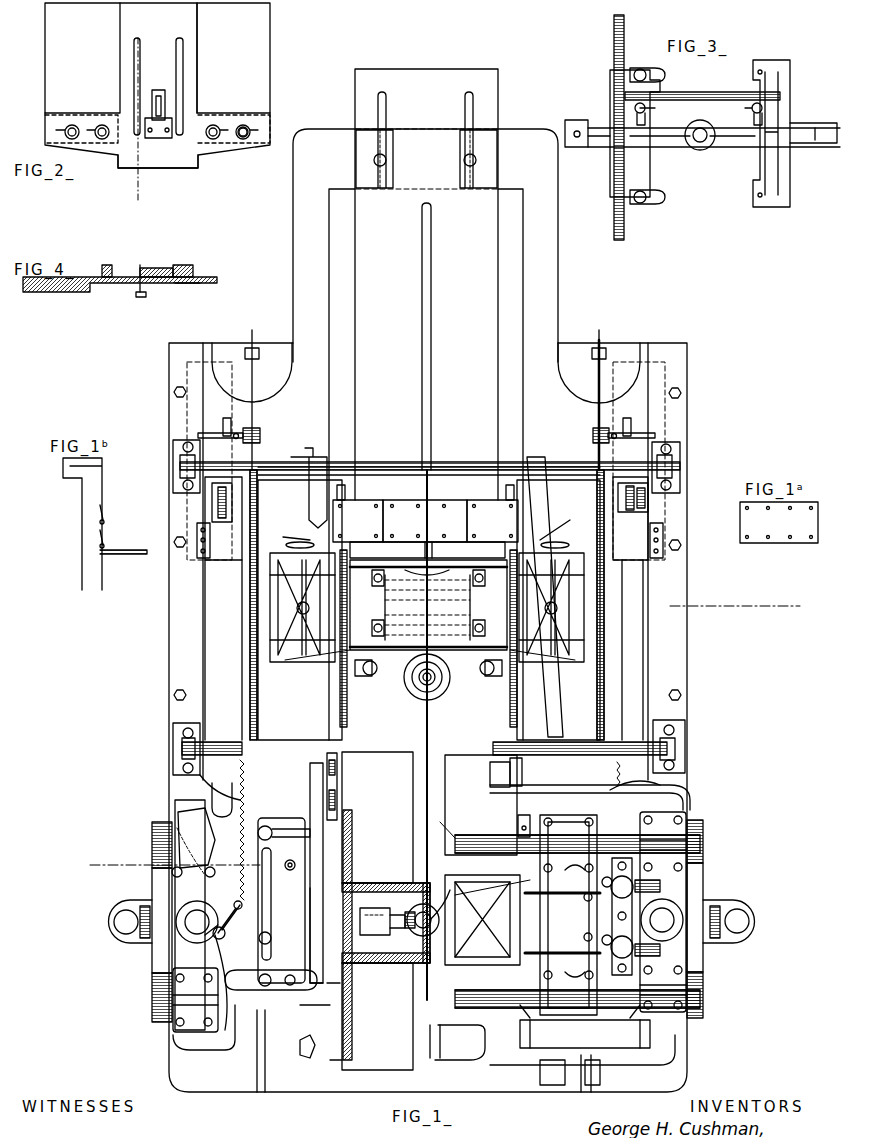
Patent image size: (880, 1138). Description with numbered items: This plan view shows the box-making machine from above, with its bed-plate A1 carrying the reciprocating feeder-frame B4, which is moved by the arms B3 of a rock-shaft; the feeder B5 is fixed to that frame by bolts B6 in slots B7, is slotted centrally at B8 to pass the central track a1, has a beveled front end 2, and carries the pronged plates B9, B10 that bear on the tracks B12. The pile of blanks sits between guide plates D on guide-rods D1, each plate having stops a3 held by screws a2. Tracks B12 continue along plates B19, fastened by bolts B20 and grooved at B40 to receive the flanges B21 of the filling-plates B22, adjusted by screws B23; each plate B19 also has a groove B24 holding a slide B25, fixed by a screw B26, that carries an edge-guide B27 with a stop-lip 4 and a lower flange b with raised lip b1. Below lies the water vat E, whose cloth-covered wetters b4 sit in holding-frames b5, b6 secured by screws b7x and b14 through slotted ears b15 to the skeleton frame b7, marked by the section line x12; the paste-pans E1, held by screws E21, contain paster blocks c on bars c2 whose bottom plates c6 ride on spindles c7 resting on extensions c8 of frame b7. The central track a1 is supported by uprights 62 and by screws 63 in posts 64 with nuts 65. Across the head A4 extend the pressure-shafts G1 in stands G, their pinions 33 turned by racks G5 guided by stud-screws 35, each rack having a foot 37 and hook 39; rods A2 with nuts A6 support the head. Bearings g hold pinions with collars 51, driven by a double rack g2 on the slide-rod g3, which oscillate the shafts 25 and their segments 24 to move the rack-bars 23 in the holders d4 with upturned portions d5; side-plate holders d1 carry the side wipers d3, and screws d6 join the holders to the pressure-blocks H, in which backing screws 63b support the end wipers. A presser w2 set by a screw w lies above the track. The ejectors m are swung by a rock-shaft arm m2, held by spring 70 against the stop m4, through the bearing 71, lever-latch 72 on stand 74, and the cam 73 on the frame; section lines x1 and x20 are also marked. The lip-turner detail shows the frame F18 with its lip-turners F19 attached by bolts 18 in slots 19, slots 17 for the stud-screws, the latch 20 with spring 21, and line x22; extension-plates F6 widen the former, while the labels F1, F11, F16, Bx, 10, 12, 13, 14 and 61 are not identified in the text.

In FIG. 2, the plate F19 is at (157, 58).
In FIG. 1, the plate F19 is at (377, 911).
In FIG. 2, the slots 17 is at (138, 66).
In FIG. 2, the bolts 18 is at (243, 125).
In FIG. 2, the slots 19 is at (90, 125).
In FIG. 2, the spring-actuated latch 20 is at (157, 97).
In FIG. 2, the spring 21 is at (161, 134).
In FIG. 2, the bottom plate F18 is at (158, 158).
In FIG. 2, the center line x22 is at (132, 206).
In FIG. 3, the holding-frame b6 is at (628, 127).
In FIG. 1, the holding-frame b6 is at (414, 699).
In FIG. 3, the skeleton frame b7 is at (645, 176).
In FIG. 1, the skeleton frame b7 is at (428, 605).
In FIG. 3, the holding-frame b5 is at (704, 90).
In FIG. 3, the extension of the frame c8 is at (587, 126).
In FIG. 3, the bottom plate c6 is at (826, 123).
In FIG. 3, the slotted ears b15 is at (753, 112).
In FIG. 1, the slotted ears b15 is at (414, 670).
In FIG. 3, the screws b14 is at (640, 228).
In FIG. 1, the screws b14 is at (428, 670).
In FIG. 3, the screws b7x is at (750, 105).
In FIG. 1, the screws b7x is at (428, 616).
In FIG. 4, the bed-plate A1 is at (75, 285).
In FIG. 1, the bed-plate A1 is at (165, 620).
In FIG. 4, the groove B24 is at (112, 267).
In FIG. 1, the groove B24 is at (257, 1066).
In FIG. 4, the plates B19 is at (156, 263).
In FIG. 1, the plates B19 is at (312, 1100).
In FIG. 4, the tracks B12 is at (195, 268).
In FIG. 1, the tracks B12 is at (337, 490).
In FIG. 4, the bolts B20 is at (134, 289).
In FIG. 1, the bolts B20 is at (271, 917).
In FIG. 4, the groove B40 is at (190, 285).
In FIG. 1B, the guides D is at (86, 502).
In FIG. 1, the guides D is at (630, 716).
In FIG. 1B, the screws a2 is at (112, 521).
In FIG. 1B, the stops a3 is at (130, 550).
In FIG. 1A, the plate B9 is at (779, 522).
In FIG. 1, the plate B9 is at (425, 521).
In FIG. 1, the feeder-frame B4 is at (293, 305).
In FIG. 1, the feeder B5 is at (426, 284).
In FIG. 1, the central slot B8 is at (422, 328).
In FIG. 1, the slots B7 is at (477, 97).
In FIG. 1, the bolts B6 is at (378, 157).
In FIG. 1, the stop m4 is at (419, 394).
In FIG. 1, the bearing 71 is at (262, 435).
In FIG. 1, the lever-latch 72 is at (656, 425).
In FIG. 1, the stand 74 is at (425, 445).
In FIG. 1, the guide-rod D1 is at (572, 462).
In FIG. 1, the arms B3 is at (212, 498).
In FIG. 1, the block Bx is at (646, 500).
In FIG. 1, the wedge or cam 73 is at (197, 545).
In FIG. 1, the plates B10 is at (425, 521).
In FIG. 1, the beveled front end 2 is at (427, 550).
In FIG. 1, the vat E is at (429, 610).
In FIG. 1, the paste-pans E1 is at (418, 671).
In FIG. 1, the screws E21 is at (417, 604).
In FIG. 1, the blocks c is at (427, 607).
In FIG. 1, the bars c2 is at (433, 600).
In FIG. 1, the spindle c7 is at (551, 608).
In FIG. 1, the uprights 62 is at (430, 578).
In FIG. 1, the posts 64 is at (450, 695).
In FIG. 1, the absorbent material b4 is at (438, 611).
In FIG. 1, the nuts 65 is at (415, 685).
In FIG. 1, the screws 63 is at (437, 680).
In FIG. 1, the central track a1 is at (430, 710).
In FIG. 1, the section line x12 is at (332, 691).
In FIG. 1, the section line x1 is at (742, 606).
In FIG. 1, the section line x20 is at (165, 864).
In FIG. 1, the ejectors m is at (220, 796).
In FIG. 1, the spring 70 is at (242, 850).
In FIG. 1, the rods A2 is at (429, 921).
In FIG. 1, the nut A6 is at (442, 941).
In FIG. 1, the arm m2 is at (227, 912).
In FIG. 1, the slide-rod g3 is at (221, 946).
In FIG. 1, the pin 61 is at (212, 940).
In FIG. 1, the stands G is at (429, 922).
In FIG. 1, the pressure-shaft G1 is at (419, 982).
In FIG. 1, the racks G5 is at (152, 880).
In FIG. 1, the pinions 33 is at (152, 830).
In FIG. 1, the foot 37 is at (112, 915).
In FIG. 1, the latch or hook 39 is at (431, 921).
In FIG. 1, the guiding stud-screw 35 is at (144, 905).
In FIG. 1, the edge-guide B27 is at (310, 888).
In FIG. 1, the screw B26 is at (272, 936).
In FIG. 1, the slide B25 is at (272, 965).
In FIG. 1, the flange b is at (312, 770).
In FIG. 1, the raised lip b1 is at (433, 815).
In FIG. 1, the screws B23 is at (337, 772).
In FIG. 1, the filling-plates B22 is at (470, 753).
In FIG. 1, the flanged portions B21 is at (302, 1045).
In FIG. 1, the motor housing F1 is at (377, 946).
In FIG. 1, the motor F11 is at (382, 928).
In FIG. 1, the gear 12 is at (423, 913).
In FIG. 1, the pinion 10 is at (405, 913).
In FIG. 1, the pin 13 is at (412, 891).
In FIG. 1, the pin 14 is at (417, 946).
In FIG. 1, the box F16 is at (393, 968).
In FIG. 1, the extension-plates F6 is at (440, 896).
In FIG. 1, the stop-lip 4 is at (333, 976).
In FIG. 1, the head A4 is at (690, 800).
In FIG. 1, the pressure-blocks H is at (568, 915).
In FIG. 1, the screw w is at (532, 920).
In FIG. 1, the presser w2 is at (474, 889).
In FIG. 1, the side-plate holders d1 is at (520, 874).
In FIG. 1, the side wipers d3 is at (487, 916).
In FIG. 1, the holders d4 is at (559, 910).
In FIG. 1, the upturned portions d5 is at (570, 988).
In FIG. 1, the screws d6 is at (572, 932).
In FIG. 1, the rack-bars 23 is at (519, 926).
In FIG. 1, the segments 24 is at (562, 921).
In FIG. 1, the screws 63b is at (594, 922).
In FIG. 1, the collars 51 is at (604, 906).
In FIG. 1, the bearings g is at (622, 915).
In FIG. 1, the double rack g2 is at (651, 904).
In FIG. 1, the shafts 25 is at (660, 909).